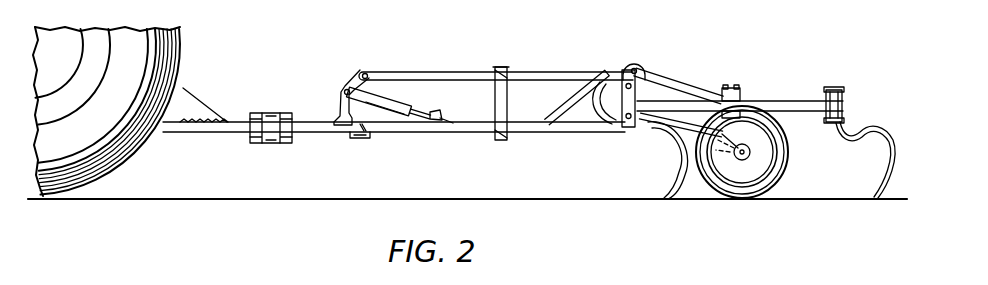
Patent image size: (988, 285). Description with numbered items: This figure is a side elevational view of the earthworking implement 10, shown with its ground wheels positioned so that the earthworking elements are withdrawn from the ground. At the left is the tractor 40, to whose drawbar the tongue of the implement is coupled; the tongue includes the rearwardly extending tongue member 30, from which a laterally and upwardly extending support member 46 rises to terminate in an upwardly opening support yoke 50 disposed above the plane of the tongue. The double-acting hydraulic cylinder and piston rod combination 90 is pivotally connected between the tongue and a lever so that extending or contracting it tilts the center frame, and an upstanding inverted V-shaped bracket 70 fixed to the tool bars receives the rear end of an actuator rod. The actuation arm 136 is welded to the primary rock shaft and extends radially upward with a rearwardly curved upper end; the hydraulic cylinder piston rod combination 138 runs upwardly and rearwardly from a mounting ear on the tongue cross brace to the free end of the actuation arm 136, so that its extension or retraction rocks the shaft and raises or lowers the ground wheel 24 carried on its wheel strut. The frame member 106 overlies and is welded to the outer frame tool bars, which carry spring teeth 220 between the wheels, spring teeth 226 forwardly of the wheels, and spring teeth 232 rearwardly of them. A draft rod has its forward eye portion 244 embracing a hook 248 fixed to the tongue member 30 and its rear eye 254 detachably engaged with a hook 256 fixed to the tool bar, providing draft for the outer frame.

The implement 10 is at (378, 63).
The ground wheel 24 is at (745, 188).
The tongue member 30 is at (338, 133).
The tractor 40 is at (190, 51).
The support member 46 is at (503, 118).
The support yoke 50 is at (503, 72).
The inverted V-shaped bracket 70 is at (655, 90).
The hydraulic cylinder and piston rod combination 90 is at (405, 107).
The frame member 106 is at (790, 103).
The actuation arm 136 is at (640, 66).
The hydraulic cylinder piston rod combination 138 is at (591, 73).
The spring teeth 220 is at (778, 190).
The spring teeth 226 is at (672, 200).
The spring teeth 232 is at (888, 143).
The eye portion 244 is at (365, 132).
The hook 248 is at (356, 139).
The eye 254 is at (625, 135).
The hook 256 is at (636, 130).